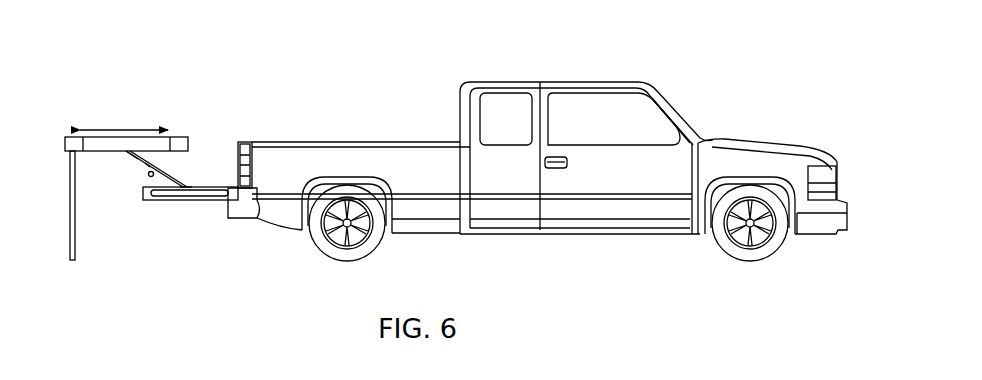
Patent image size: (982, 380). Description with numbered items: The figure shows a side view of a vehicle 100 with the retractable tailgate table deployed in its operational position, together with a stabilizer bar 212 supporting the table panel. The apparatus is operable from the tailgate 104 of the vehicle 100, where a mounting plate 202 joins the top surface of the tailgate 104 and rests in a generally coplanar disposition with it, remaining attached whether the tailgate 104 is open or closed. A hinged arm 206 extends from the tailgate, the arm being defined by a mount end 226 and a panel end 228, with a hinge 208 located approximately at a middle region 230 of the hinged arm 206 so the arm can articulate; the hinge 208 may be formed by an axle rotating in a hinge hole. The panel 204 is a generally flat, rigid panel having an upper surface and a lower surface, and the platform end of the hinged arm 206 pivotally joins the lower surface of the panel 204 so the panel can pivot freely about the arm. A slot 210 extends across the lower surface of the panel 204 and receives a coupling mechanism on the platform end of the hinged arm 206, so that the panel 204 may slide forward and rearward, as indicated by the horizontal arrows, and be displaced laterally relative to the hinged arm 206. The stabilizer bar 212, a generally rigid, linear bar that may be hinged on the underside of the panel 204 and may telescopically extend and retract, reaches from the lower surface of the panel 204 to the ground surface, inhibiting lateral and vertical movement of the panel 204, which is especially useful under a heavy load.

The vehicle 100 is at (345, 68).
The tailgate 104 is at (163, 203).
The mounting plate 202 is at (221, 199).
The panel 204 is at (70, 133).
The hinged arm 206 is at (144, 168).
The hinge 208 is at (160, 171).
The slot 210 is at (127, 150).
The stabilizer bar 212 is at (80, 262).
The mount end 226 is at (186, 187).
The panel end 228 is at (136, 158).
The middle region 230 is at (150, 177).